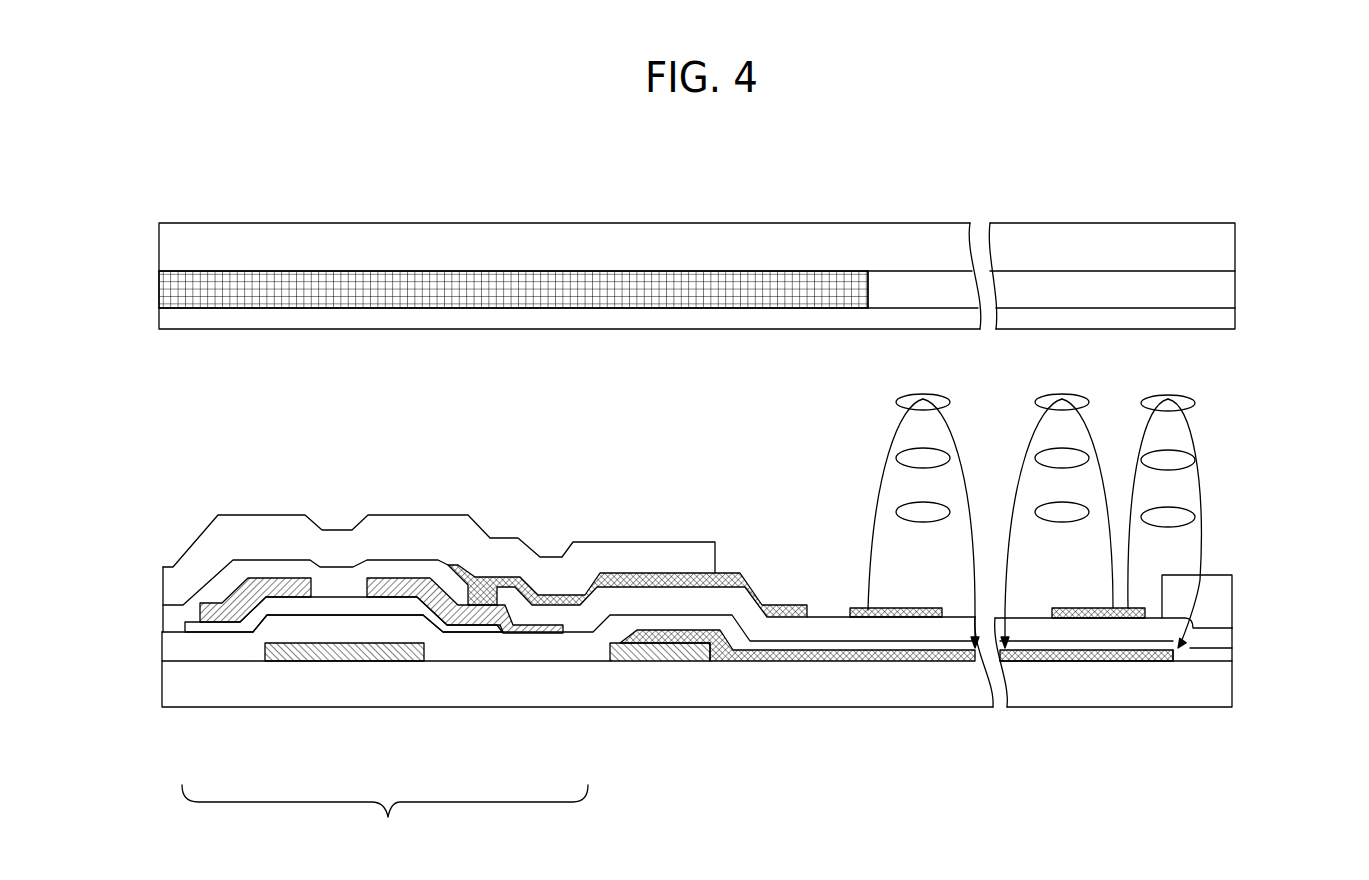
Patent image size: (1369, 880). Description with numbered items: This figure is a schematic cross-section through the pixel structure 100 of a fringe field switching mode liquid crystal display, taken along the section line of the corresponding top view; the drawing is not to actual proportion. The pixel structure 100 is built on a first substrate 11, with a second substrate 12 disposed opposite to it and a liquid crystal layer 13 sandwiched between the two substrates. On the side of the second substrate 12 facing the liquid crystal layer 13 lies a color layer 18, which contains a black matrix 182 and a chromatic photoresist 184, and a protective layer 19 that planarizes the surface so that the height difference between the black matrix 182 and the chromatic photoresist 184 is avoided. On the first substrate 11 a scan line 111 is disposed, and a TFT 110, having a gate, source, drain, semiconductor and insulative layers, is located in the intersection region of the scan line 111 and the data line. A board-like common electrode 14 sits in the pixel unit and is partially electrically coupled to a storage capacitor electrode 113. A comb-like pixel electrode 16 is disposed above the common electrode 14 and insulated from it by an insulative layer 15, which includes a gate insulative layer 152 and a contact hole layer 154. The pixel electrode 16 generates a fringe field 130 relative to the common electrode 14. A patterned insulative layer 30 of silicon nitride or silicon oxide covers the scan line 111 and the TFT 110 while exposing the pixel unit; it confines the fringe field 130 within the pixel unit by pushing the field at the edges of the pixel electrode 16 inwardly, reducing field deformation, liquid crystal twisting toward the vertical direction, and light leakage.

The pixel structure 100 is at (135, 145).
The first substrate 11 is at (162, 688).
The TFT 110 is at (568, 709).
The scan line 111 is at (344, 661).
The storage capacitor electrode 113 is at (642, 652).
The second substrate 12 is at (510, 222).
The liquid crystal layer 13 is at (1030, 511).
The fringe field 130 is at (870, 508).
The common electrode 14 is at (842, 656).
The insulative layer 15 is at (1117, 703).
The gate insulative layer 152 is at (1048, 645).
The contact hole layer 154 is at (1075, 627).
The pixel electrode 16 is at (700, 572).
The color layer 18 is at (155, 283).
The black matrix 182 is at (688, 300).
The chromatic photoresist 184 is at (932, 292).
The protective layer 19 is at (201, 328).
The patterned insulative layer 30 is at (235, 522).